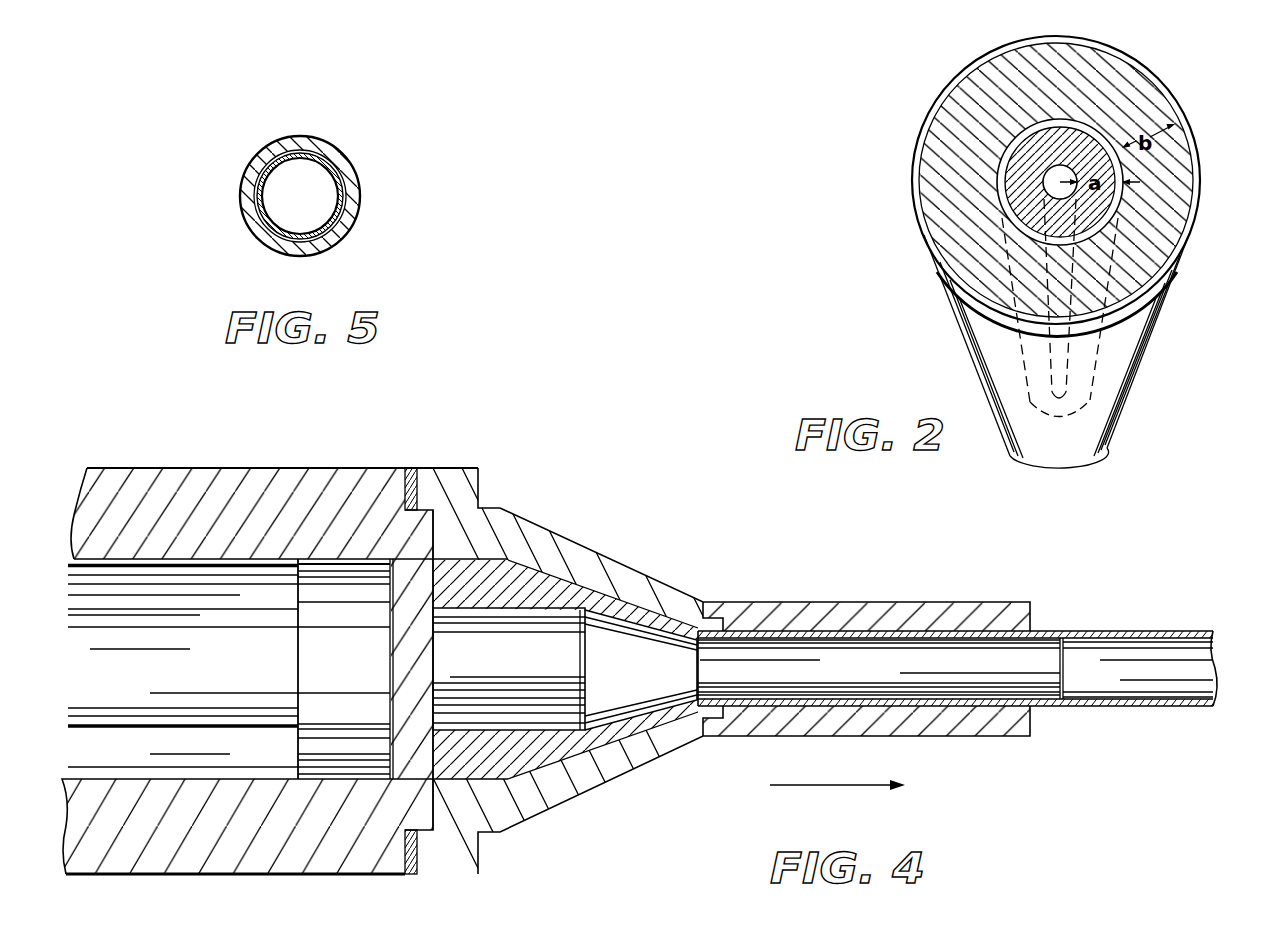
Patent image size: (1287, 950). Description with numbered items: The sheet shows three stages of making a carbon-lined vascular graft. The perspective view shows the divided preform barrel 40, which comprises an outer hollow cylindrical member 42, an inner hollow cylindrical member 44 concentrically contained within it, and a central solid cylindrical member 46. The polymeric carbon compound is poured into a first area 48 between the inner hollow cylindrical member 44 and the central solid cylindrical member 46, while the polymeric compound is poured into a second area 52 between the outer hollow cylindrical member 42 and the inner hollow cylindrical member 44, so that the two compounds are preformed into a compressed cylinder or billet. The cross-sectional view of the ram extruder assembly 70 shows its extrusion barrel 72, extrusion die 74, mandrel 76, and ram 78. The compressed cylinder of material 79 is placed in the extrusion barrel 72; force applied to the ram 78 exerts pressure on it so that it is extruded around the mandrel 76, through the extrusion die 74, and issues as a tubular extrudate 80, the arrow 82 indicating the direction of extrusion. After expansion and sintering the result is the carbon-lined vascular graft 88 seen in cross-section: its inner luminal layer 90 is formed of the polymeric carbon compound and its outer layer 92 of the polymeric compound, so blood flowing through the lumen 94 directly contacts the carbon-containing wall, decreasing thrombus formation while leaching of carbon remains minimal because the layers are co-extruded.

In FIG. 2, the divided preform barrel 40 is at (1185, 78).
In FIG. 2, the outer hollow cylindrical member 42 is at (1196, 165).
In FIG. 2, the inner hollow cylindrical member 44 is at (1093, 133).
In FIG. 2, the central solid cylindrical member 46 is at (1060, 165).
In FIG. 2, the first area 48 is at (1020, 206).
In FIG. 2, the second area 52 is at (937, 147).
In FIG. 4, the ram extruder assembly 70 is at (880, 580).
In FIG. 4, the extrusion barrel 72 is at (410, 467).
In FIG. 4, the extrusion die 74 is at (1013, 603).
In FIG. 4, the mandrel 76 is at (960, 660).
In FIG. 4, the ram 78 is at (261, 727).
In FIG. 4, the compressed cylinder of material 79 is at (408, 637).
In FIG. 4, the tubular extrudate 80 is at (1122, 631).
In FIG. 4, the arrow 82 is at (833, 786).
In FIG. 5, the carbon-lined vascular graft 88 is at (359, 130).
In FIG. 5, the inner luminal layer 90 is at (359, 187).
In FIG. 5, the outer layer 92 is at (352, 223).
In FIG. 5, the lumen 94 is at (280, 205).